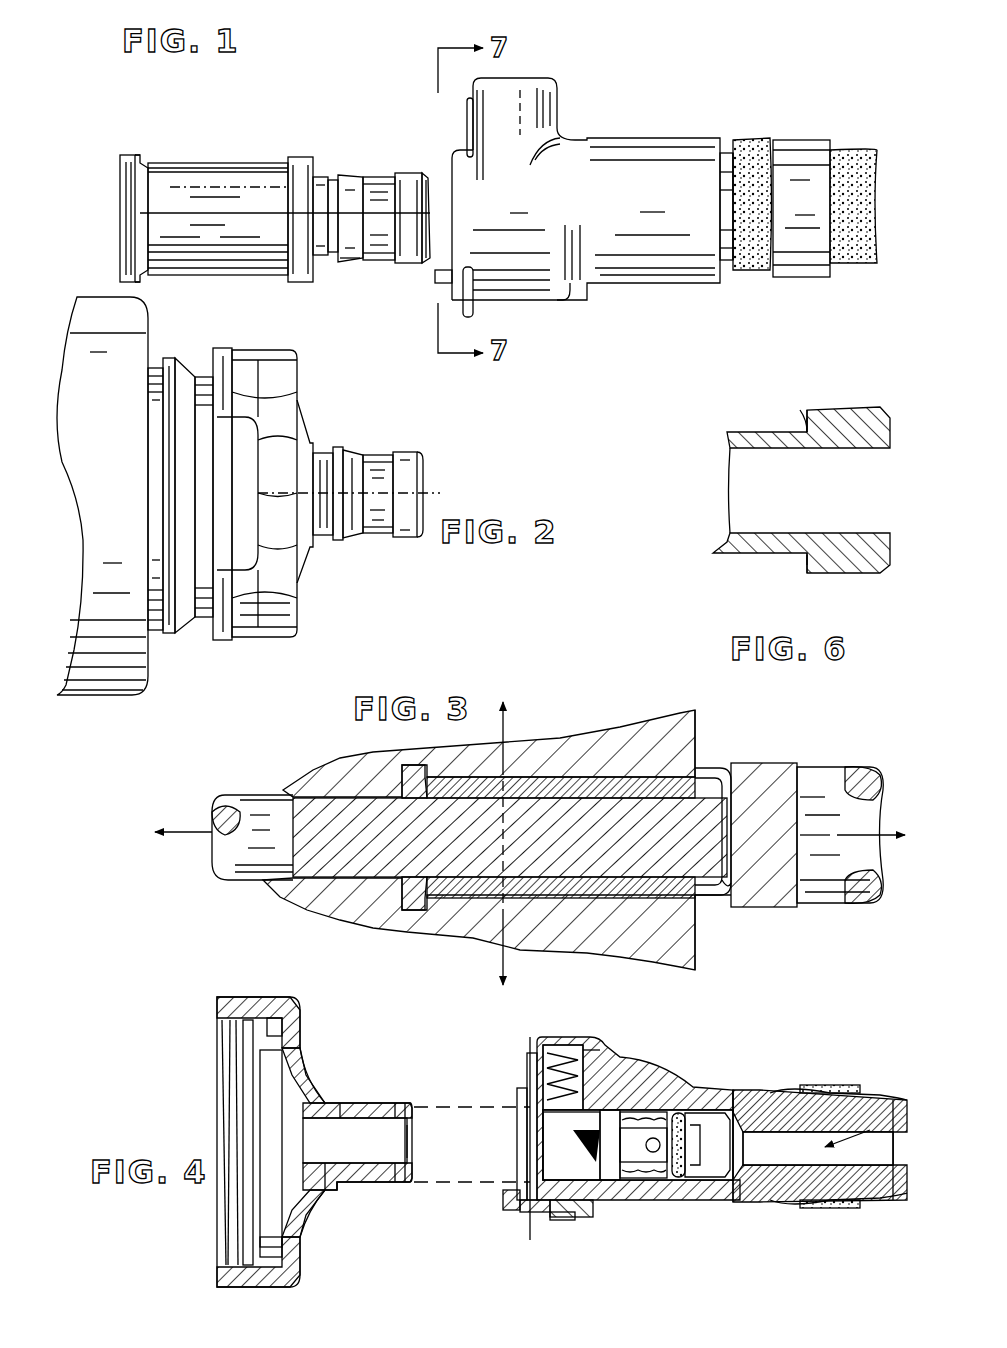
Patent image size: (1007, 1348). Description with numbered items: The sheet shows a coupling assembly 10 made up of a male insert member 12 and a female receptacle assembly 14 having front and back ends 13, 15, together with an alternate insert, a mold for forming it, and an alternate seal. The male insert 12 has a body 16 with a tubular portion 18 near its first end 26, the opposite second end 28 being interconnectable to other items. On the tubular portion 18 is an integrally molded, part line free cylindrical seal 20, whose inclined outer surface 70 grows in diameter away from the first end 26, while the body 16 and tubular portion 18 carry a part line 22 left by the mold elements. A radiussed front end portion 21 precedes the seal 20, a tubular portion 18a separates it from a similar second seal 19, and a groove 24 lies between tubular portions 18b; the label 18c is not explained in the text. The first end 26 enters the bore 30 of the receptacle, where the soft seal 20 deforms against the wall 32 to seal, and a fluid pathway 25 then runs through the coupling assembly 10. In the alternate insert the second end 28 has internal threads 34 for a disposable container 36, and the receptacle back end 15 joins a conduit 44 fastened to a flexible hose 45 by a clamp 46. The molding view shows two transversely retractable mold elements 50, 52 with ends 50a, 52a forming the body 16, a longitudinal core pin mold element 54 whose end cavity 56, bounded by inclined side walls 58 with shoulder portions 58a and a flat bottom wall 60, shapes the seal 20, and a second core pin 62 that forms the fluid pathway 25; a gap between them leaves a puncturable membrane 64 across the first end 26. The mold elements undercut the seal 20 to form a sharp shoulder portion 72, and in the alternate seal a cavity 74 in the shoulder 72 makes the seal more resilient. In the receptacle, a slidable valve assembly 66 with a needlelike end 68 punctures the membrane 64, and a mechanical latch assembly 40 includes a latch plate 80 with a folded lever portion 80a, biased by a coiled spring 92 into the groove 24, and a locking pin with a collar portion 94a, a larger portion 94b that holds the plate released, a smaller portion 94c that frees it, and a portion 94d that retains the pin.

In FIG. 1, the coupling assembly 10 is at (296, 78).
In FIG. 4, the coupling assembly 10 is at (281, 996).
In FIG. 1, the male insert member 12 is at (258, 158).
In FIG. 2, the male insert member 12 is at (259, 642).
In FIG. 3, the male insert member 12 is at (534, 768).
In FIG. 1, the first end of female receptacle assembly 13 is at (452, 183).
In FIG. 4, the first end of female receptacle assembly 13 is at (515, 1100).
In FIG. 1, the female receptacle assembly 14 is at (662, 126).
In FIG. 1, the second end of female receptacle assembly 15 is at (724, 150).
In FIG. 4, the second end of female receptacle assembly 15 is at (733, 1197).
In FIG. 1, the body 16 is at (223, 160).
In FIG. 2, the body 16 is at (263, 352).
In FIG. 1, the tubular portion 18 is at (380, 264).
In FIG. 2, the tubular portion 18 is at (370, 539).
In FIG. 6, the tubular portion 18 is at (737, 432).
In FIG. 4, the tubular portion 18 is at (367, 1105).
In FIG. 1, the tubular portion 18a is at (381, 174).
In FIG. 1, the tubular portions 18b is at (340, 262).
In FIG. 1, the nozzle rib 18c is at (323, 262).
In FIG. 1, the second seal 19 is at (353, 171).
In FIG. 4, the second seal 19 is at (348, 1188).
In FIG. 1, the cylindrical seal 20 is at (413, 171).
In FIG. 2, the cylindrical seal 20 is at (400, 452).
In FIG. 6, the cylindrical seal 20 is at (847, 410).
In FIG. 4, the cylindrical seal 20 is at (393, 1105).
In FIG. 1, the radiussed front end portion 21 is at (430, 233).
In FIG. 1, the part line 22 is at (183, 212).
In FIG. 2, the part line 22 is at (350, 539).
In FIG. 1, the groove 24 is at (333, 177).
In FIG. 2, the groove 24 is at (330, 455).
In FIG. 4, the groove 24 is at (333, 1188).
In FIG. 4, the fluid pathway 25 is at (375, 1148).
In FIG. 1, the first end 26 is at (428, 247).
In FIG. 2, the first end 26 is at (423, 463).
In FIG. 4, the first end 26 is at (413, 1167).
In FIG. 1, the second end 28 is at (120, 233).
In FIG. 2, the second end 28 is at (212, 627).
In FIG. 4, the second end 28 is at (217, 1257).
In FIG. 4, the bore 30 is at (570, 1180).
In FIG. 4, the wall 32 is at (550, 1115).
In FIG. 4, the internal threads 34 is at (223, 1037).
In FIG. 2, the disposable container 36 is at (98, 697).
In FIG. 4, the mechanical latch assembly 40 is at (550, 1025).
In FIG. 1, the conduit 44 is at (723, 153).
In FIG. 4, the conduit 44 is at (747, 1107).
In FIG. 1, the flexible hose 45 is at (853, 147).
In FIG. 4, the flexible hose 45 is at (890, 1193).
In FIG. 1, the clamp 46 is at (800, 140).
In FIG. 4, the clamp 46 is at (823, 1090).
In FIG. 3, the mold element 50 is at (583, 743).
In FIG. 3, the end of mold element 50a is at (697, 723).
In FIG. 3, the mold element 52 is at (643, 943).
In FIG. 3, the end of mold element 52a is at (697, 953).
In FIG. 3, the longitudinally retractable mold element member 54 is at (760, 773).
In FIG. 3, the end cavity 56 is at (707, 907).
In FIG. 3, the inclined side walls 58 is at (707, 773).
In FIG. 3, the shoulder portions 58a is at (717, 900).
In FIG. 3, the bottom wall 60 is at (735, 827).
In FIG. 3, the second longitudinally retractable mold element member 62 is at (257, 797).
In FIG. 4, the puncturable membrane member 64 is at (410, 1140).
In FIG. 4, the slidable valve assembly 66 is at (712, 1122).
In FIG. 4, the needlelike end 68 is at (617, 1205).
In FIG. 2, the outer surface 70 is at (402, 541).
In FIG. 2, the shoulder portion 72 is at (393, 452).
In FIG. 6, the shoulder portion 72 is at (807, 410).
In FIG. 4, the shoulder portion 72 is at (347, 1184).
In FIG. 6, the cavity 74 is at (805, 418).
In FIG. 4, the latch plate 80 is at (530, 1210).
In FIG. 4, the lever portion 80a is at (570, 1040).
In FIG. 4, the coiled spring 92 is at (593, 1087).
In FIG. 4, the collar portion 94a is at (577, 1207).
In FIG. 4, the pin portion 94b is at (530, 1213).
In FIG. 4, the pin portion 94c is at (530, 1193).
In FIG. 4, the pin portion 94d is at (560, 1213).